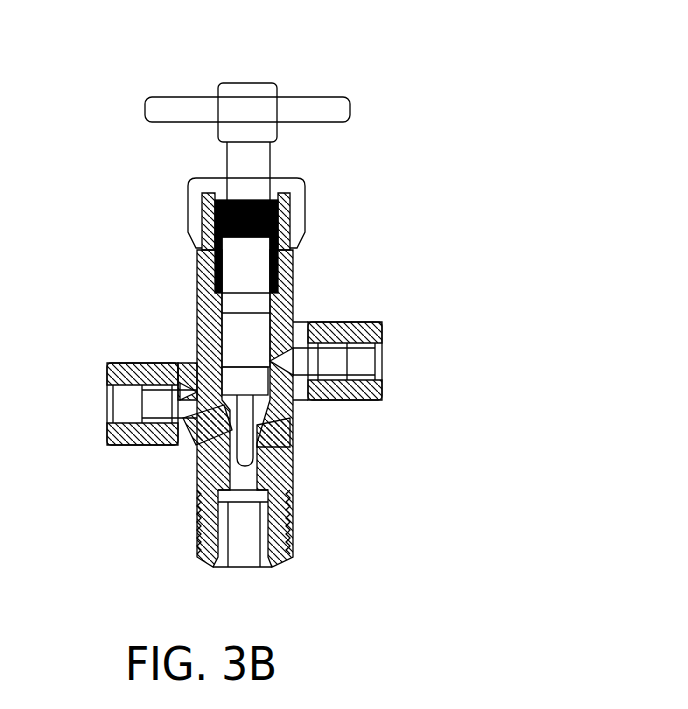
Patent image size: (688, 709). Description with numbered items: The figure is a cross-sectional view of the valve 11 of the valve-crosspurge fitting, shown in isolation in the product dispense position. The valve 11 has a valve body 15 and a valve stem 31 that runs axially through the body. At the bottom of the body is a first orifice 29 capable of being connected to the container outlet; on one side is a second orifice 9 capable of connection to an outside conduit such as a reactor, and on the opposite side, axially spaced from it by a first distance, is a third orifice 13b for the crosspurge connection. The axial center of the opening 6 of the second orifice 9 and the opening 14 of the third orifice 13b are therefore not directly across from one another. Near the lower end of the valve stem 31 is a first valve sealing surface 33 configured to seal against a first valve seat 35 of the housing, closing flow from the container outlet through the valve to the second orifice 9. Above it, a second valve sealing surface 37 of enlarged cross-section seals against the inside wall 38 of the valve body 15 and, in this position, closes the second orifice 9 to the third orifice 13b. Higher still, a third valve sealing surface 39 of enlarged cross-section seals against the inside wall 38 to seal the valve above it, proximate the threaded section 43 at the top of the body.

The valve 11 is at (328, 66).
The valve stem 31 is at (227, 157).
The threaded section 43 is at (297, 220).
The valve body 15 is at (197, 298).
The third valve sealing surface 39 is at (262, 302).
The second valve sealing surface 37 is at (237, 380).
The first valve seat 35 is at (293, 443).
The inside wall 38 is at (227, 428).
The first valve sealing surface 33 is at (293, 417).
The first orifice 29 is at (283, 547).
The second orifice 9 is at (100, 414).
The opening 6 is at (143, 398).
The third orifice 13b is at (383, 355).
The opening 14 is at (300, 357).